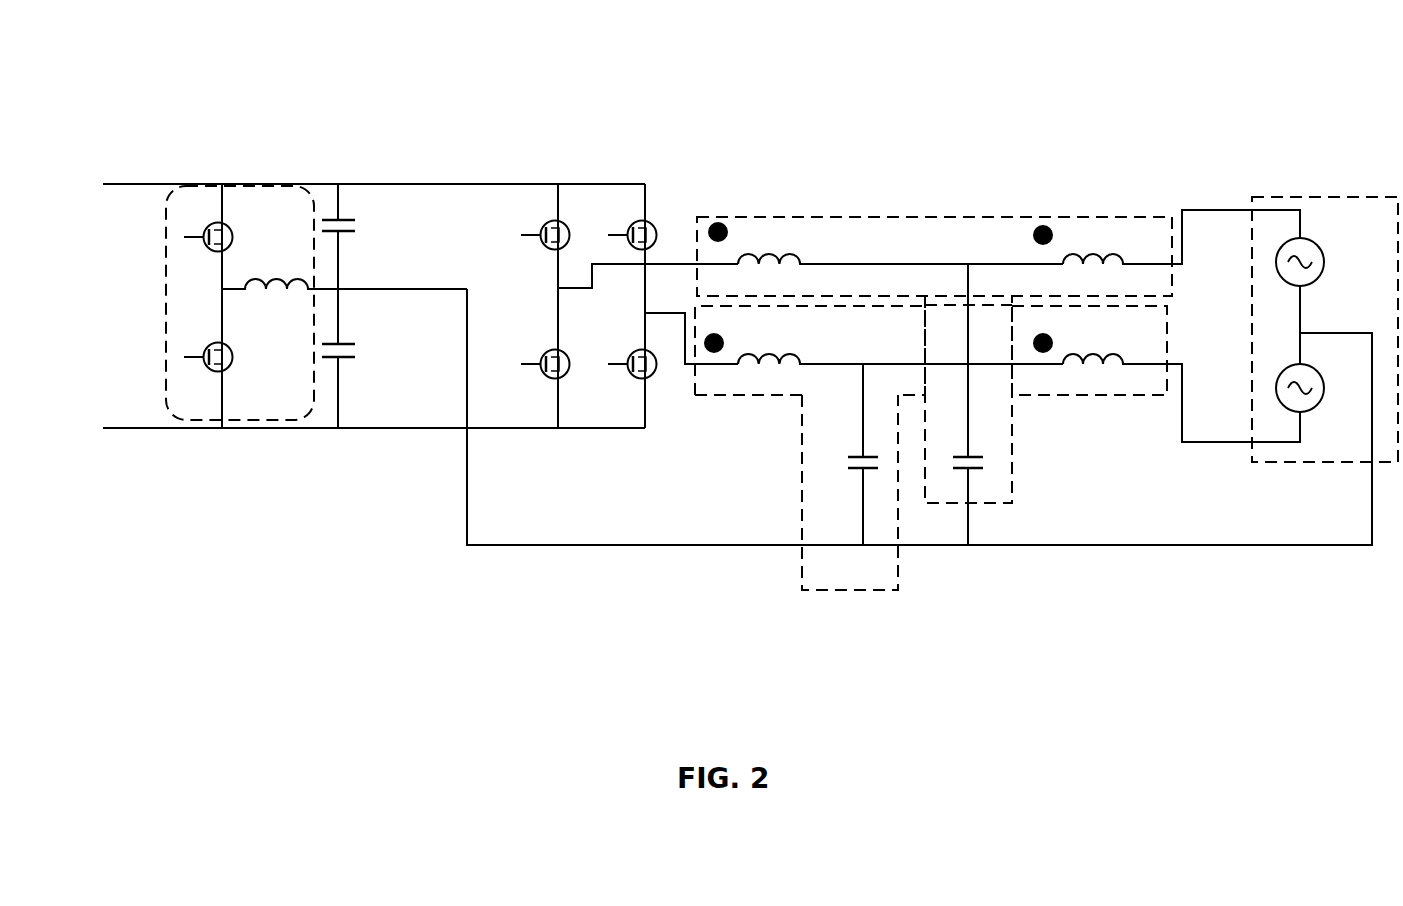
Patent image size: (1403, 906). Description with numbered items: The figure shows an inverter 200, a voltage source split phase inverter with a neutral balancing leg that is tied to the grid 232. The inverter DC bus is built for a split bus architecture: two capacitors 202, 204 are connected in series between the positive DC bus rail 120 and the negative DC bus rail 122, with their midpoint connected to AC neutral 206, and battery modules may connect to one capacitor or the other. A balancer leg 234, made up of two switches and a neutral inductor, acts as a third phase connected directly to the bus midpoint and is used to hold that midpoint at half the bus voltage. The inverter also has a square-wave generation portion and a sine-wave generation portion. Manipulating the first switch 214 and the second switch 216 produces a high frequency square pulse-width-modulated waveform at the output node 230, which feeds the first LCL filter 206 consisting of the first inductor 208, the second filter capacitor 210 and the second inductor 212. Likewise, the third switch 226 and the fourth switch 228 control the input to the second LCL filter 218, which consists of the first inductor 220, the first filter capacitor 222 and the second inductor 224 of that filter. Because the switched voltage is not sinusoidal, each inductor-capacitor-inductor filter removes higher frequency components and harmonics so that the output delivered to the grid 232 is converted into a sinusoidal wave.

The inverter 200 is at (124, 72).
The DC bus positive rail 120 is at (212, 145).
The DC bus negative rail 122 is at (185, 470).
The balancer leg 234 is at (166, 300).
The capacitor 202 is at (413, 222).
The capacitor 204 is at (400, 365).
The switch S1 214 is at (560, 222).
The switch S2 216 is at (555, 378).
The switch S3 226 is at (645, 222).
The switch S4 228 is at (642, 378).
The first LCL filter 206 is at (952, 217).
The inductor L1 208 is at (790, 258).
The high frequency square waveform node 230 is at (718, 222).
The inductor L11 220 is at (748, 385).
The inductor L2 212 is at (1100, 258).
The inductor L22 224 is at (1118, 392).
The capacitor C1 222 is at (835, 470).
The second LCL filter 218 is at (845, 592).
The capacitor C2 210 is at (995, 467).
The grid 232 is at (1335, 197).